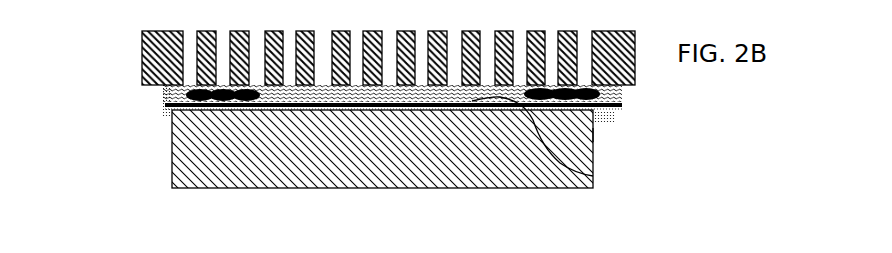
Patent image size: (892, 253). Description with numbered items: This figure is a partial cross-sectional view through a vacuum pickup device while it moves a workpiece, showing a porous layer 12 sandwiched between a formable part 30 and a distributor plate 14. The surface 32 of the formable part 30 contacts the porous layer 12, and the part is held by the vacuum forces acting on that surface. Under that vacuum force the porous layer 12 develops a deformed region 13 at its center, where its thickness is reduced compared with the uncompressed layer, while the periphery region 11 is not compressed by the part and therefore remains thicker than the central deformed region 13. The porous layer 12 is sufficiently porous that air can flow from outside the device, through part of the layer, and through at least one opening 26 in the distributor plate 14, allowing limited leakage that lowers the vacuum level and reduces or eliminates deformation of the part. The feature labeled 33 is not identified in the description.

The periphery region 11 is at (597, 118).
The porous layer 12 is at (220, 143).
The deformed region 13 is at (593, 175).
The distributor plate 14 is at (105, 31).
The opening 26 is at (583, 53).
The formable part 30 is at (235, 100).
The surface 32 is at (593, 135).
The voids 33 is at (195, 102).